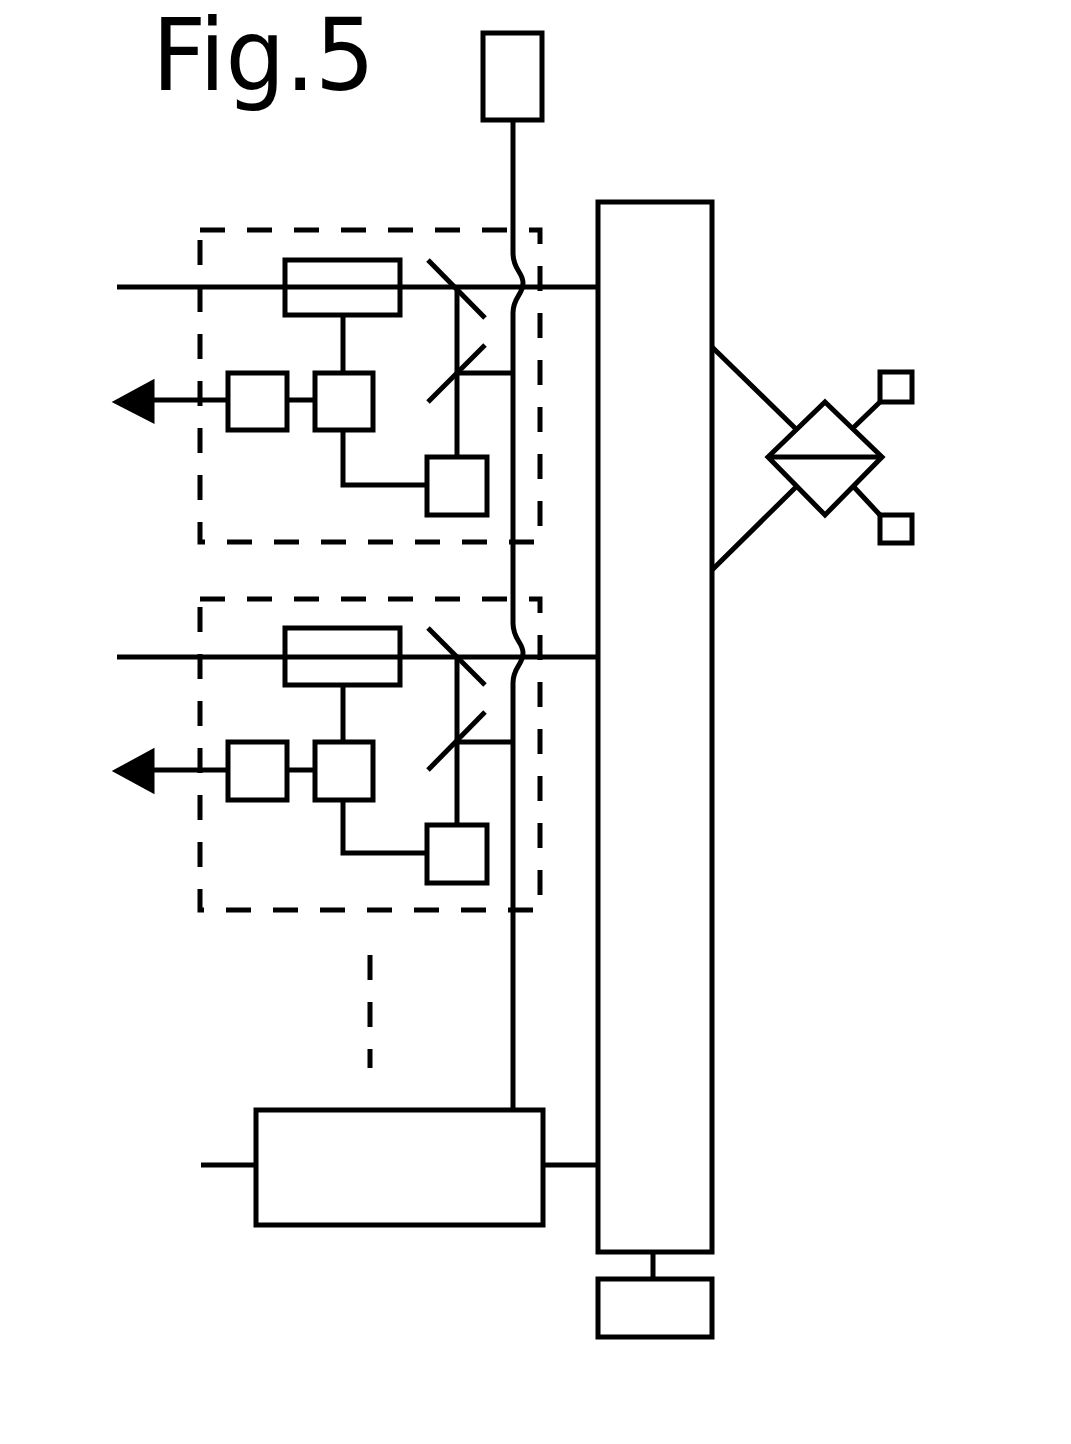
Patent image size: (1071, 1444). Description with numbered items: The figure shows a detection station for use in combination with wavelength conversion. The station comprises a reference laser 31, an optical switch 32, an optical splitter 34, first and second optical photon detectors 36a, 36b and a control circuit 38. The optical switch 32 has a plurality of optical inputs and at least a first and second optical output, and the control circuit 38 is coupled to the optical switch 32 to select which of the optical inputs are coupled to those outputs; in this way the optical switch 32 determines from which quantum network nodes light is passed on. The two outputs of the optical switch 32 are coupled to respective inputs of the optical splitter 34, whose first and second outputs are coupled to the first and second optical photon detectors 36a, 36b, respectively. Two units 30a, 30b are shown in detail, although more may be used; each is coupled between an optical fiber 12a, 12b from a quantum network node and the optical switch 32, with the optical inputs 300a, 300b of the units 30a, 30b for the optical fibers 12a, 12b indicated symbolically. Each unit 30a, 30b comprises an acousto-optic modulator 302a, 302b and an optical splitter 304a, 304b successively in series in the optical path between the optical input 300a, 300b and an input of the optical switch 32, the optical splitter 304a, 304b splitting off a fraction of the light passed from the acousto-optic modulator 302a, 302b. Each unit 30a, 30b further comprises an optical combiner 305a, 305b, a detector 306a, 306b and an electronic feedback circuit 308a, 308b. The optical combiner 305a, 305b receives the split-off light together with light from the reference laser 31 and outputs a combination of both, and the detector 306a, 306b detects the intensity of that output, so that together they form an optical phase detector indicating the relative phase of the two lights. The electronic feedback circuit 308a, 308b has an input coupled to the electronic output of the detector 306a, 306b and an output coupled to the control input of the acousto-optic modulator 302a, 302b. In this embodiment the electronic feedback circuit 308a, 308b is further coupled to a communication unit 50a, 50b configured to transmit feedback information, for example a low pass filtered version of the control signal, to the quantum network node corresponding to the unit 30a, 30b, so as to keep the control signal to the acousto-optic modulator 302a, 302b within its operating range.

The optical fiber 12a is at (162, 288).
The optical fiber 12b is at (162, 656).
The unit 30a is at (200, 433).
The unit 30b is at (200, 717).
The reference laser 31 is at (542, 62).
The optical switch 32 is at (623, 202).
The optical splitter 34 is at (820, 400).
The first optical photon detector 36a is at (893, 372).
The second optical photon detector 36b is at (895, 543).
The control circuit 38 is at (712, 1304).
The communication unit 50a is at (228, 432).
The communication unit 50b is at (228, 797).
The optical input 300a is at (200, 285).
The optical input 300b is at (200, 650).
The acousto-optic modulator 302a is at (325, 260).
The acousto-optic modulator 302b is at (325, 628).
The optical splitter 304a is at (435, 262).
The optical splitter 304b is at (435, 632).
The optical combiner 305a is at (430, 400).
The optical combiner 305b is at (430, 768).
The detector 306a is at (427, 495).
The detector 306b is at (427, 865).
The electronic feedback circuit 308a is at (315, 432).
The electronic feedback circuit 308b is at (315, 802).